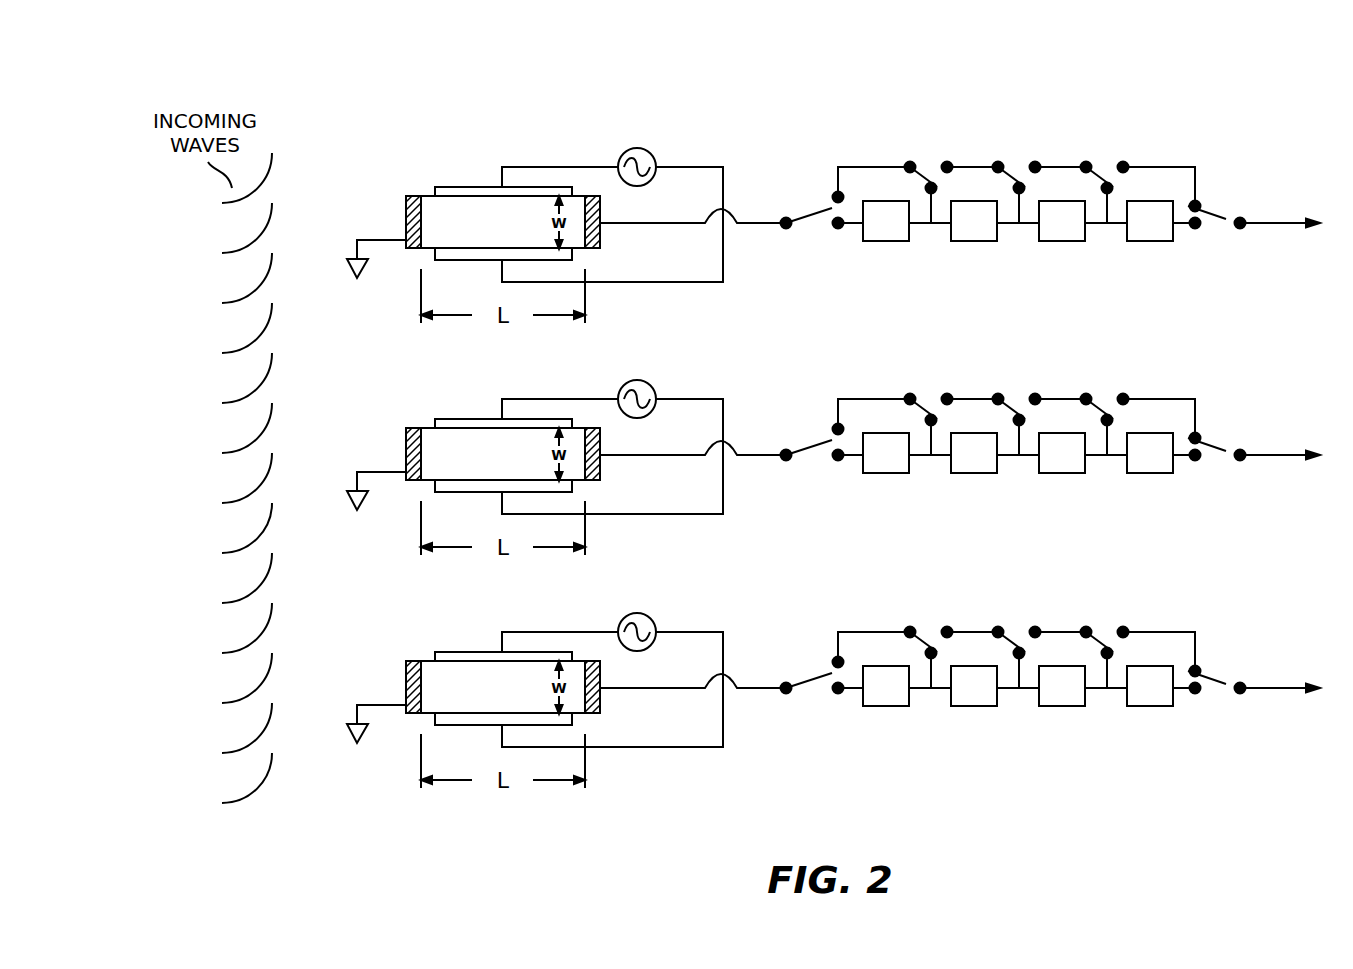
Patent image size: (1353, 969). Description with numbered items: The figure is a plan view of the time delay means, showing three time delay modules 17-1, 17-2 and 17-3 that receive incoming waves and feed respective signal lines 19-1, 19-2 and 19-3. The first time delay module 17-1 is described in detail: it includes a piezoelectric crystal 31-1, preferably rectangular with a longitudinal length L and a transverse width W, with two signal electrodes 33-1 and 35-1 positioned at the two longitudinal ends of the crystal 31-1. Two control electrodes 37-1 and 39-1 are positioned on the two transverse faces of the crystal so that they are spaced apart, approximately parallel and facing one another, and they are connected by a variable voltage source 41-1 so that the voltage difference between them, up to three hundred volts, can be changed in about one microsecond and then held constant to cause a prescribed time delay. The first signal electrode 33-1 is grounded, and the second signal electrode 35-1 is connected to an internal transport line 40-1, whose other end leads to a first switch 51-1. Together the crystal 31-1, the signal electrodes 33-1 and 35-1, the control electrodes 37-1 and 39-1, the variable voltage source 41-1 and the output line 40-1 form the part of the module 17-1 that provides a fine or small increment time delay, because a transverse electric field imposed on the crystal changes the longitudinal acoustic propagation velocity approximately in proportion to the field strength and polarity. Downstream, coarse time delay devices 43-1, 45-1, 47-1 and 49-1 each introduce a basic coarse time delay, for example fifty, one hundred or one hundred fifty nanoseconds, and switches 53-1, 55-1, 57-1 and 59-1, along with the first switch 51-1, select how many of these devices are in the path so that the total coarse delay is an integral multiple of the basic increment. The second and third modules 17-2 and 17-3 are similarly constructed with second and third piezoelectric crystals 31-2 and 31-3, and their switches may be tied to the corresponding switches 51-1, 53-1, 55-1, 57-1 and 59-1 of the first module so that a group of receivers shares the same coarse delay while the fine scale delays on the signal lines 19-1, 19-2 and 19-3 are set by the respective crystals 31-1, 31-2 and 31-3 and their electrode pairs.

The time delay module 17-1 is at (683, 142).
The second time delay module 17-2 is at (939, 391).
The third time delay module 17-3 is at (939, 624).
The signal line 19-1 is at (1272, 225).
The signal line 19-2 is at (1280, 490).
The signal line 19-3 is at (1280, 723).
The piezoelectric crystal 31-1 is at (447, 227).
The second piezoelectric crystal 31-2 is at (436, 454).
The third piezoelectric crystal 31-3 is at (436, 687).
The first signal electrode 33-1 is at (407, 213).
The second signal electrode 35-1 is at (601, 198).
The control electrode 37-1 is at (457, 262).
The control electrode 39-1 is at (453, 187).
The internal transport line 40-1 is at (655, 224).
The variable voltage source 41-1 is at (640, 149).
The coarse time delay device 43-1 is at (887, 242).
The coarse time delay device 45-1 is at (970, 242).
The coarse time delay device 47-1 is at (1068, 242).
The coarse time delay device 49-1 is at (1150, 242).
The first switch 51-1 is at (815, 221).
The switch 53-1 is at (923, 170).
The switch 55-1 is at (1020, 170).
The switch 57-1 is at (1098, 173).
The switch 59-1 is at (1220, 217).